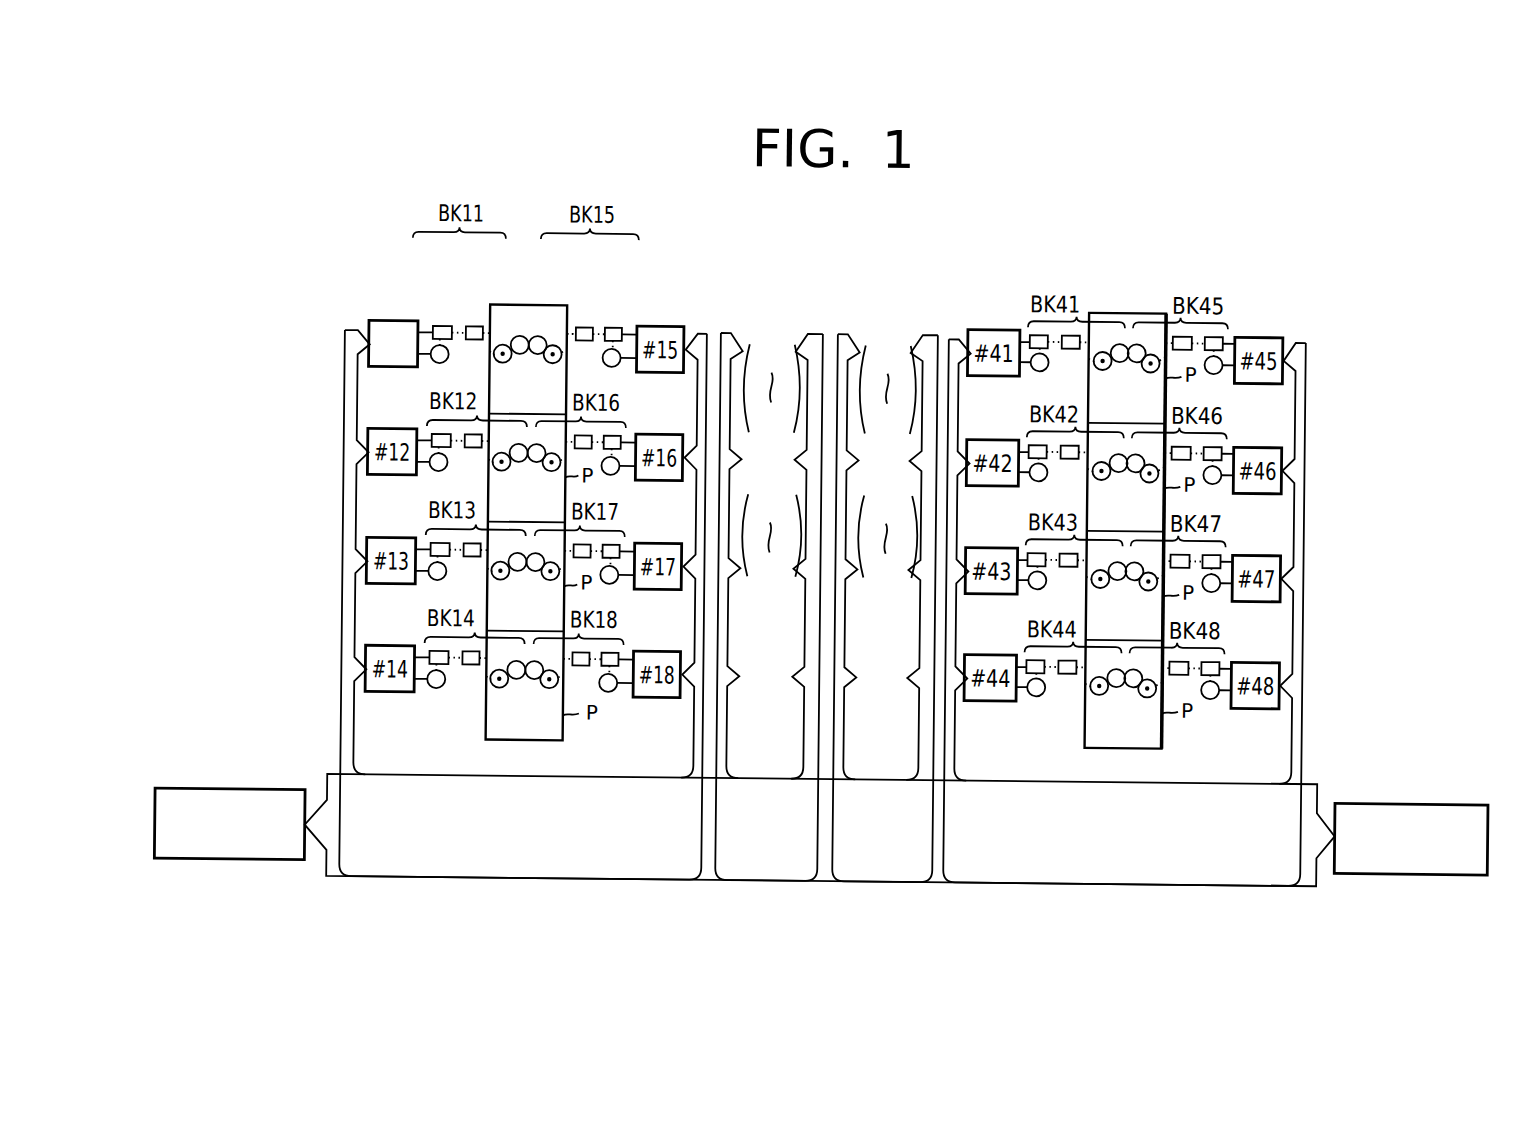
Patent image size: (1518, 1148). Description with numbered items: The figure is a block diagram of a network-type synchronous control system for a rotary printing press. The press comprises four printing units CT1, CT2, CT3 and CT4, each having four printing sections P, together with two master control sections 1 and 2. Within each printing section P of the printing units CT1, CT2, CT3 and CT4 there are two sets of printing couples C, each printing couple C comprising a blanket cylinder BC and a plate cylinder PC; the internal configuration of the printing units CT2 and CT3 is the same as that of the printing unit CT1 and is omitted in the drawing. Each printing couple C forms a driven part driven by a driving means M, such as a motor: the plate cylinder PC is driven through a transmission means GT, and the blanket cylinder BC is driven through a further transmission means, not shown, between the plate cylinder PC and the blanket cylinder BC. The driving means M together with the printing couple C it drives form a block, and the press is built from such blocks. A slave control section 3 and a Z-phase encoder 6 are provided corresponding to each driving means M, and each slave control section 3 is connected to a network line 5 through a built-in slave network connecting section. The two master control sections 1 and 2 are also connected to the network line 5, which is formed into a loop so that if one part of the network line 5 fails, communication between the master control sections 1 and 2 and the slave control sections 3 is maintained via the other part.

The master control section 1 is at (283, 790).
The master control section 2 is at (1384, 793).
The slave control section 3 is at (381, 320).
The network line 5 is at (535, 776).
The Z-phase encoder 6 is at (450, 356).
The printing unit CT1 is at (490, 719).
The printing unit CT2 is at (769, 607).
The printing unit CT3 is at (885, 608).
The printing unit CT4 is at (1089, 730).
The driving means M is at (440, 324).
The transmission means GT is at (474, 324).
The printing couple C is at (530, 302).
The plate cylinder PC is at (503, 343).
The blanket cylinder BC is at (520, 334).
The printing section P is at (567, 367).